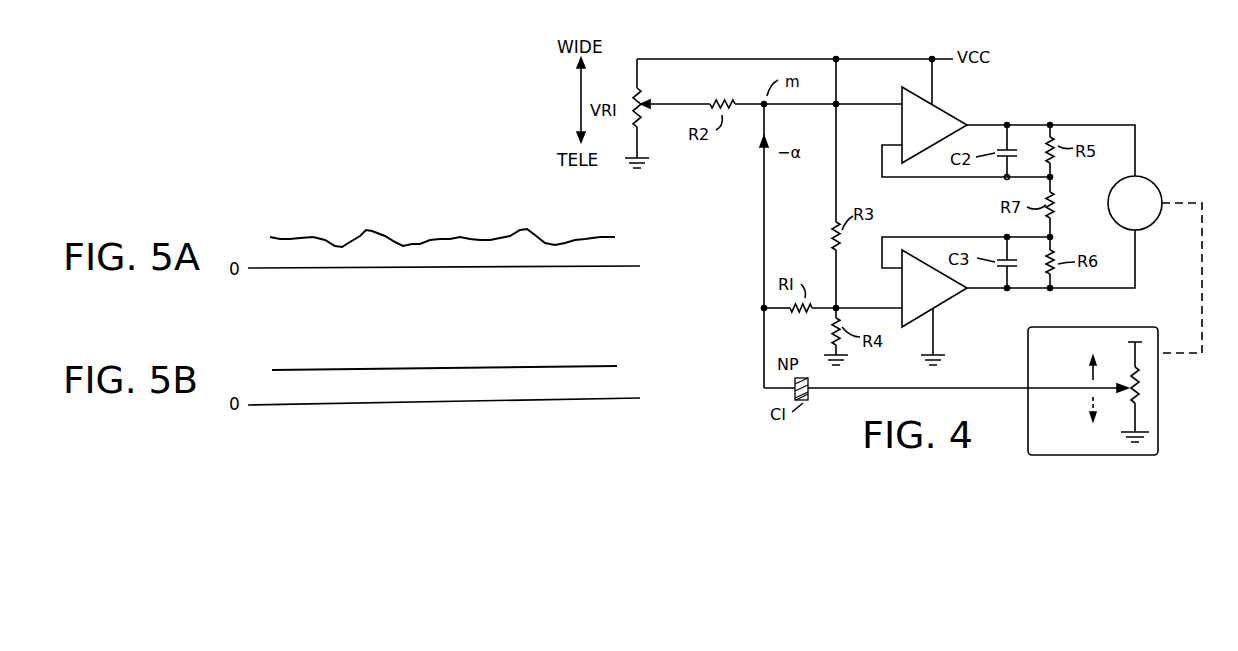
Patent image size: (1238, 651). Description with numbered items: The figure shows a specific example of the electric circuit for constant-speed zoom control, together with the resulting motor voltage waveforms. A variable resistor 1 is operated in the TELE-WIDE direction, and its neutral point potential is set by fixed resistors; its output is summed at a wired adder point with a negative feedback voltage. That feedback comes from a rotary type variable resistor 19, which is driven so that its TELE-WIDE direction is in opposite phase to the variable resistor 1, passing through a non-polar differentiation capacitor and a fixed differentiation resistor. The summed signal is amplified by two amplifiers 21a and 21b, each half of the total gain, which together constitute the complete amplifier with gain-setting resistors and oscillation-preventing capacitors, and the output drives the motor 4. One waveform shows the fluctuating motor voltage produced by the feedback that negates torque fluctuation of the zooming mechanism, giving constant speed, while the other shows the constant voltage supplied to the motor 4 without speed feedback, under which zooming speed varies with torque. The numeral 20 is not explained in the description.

The variable resistor 1 is at (640, 97).
The motor 4 is at (1157, 183).
The rotary type variable resistor 19 is at (1158, 417).
The element 20 is at (352, 0).
The amplifier 21a is at (948, 108).
The amplifier 21b is at (947, 307).